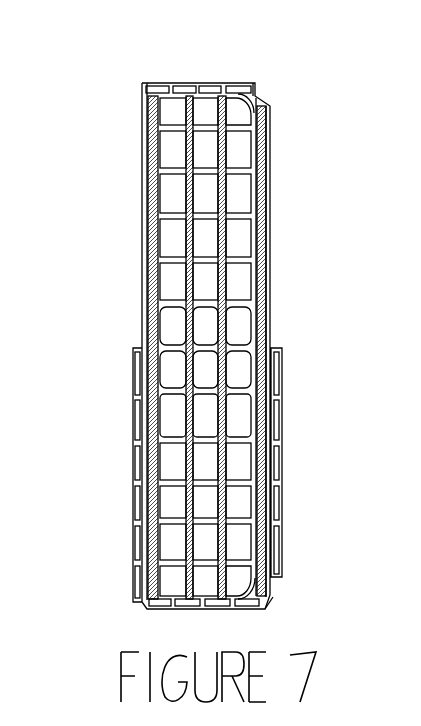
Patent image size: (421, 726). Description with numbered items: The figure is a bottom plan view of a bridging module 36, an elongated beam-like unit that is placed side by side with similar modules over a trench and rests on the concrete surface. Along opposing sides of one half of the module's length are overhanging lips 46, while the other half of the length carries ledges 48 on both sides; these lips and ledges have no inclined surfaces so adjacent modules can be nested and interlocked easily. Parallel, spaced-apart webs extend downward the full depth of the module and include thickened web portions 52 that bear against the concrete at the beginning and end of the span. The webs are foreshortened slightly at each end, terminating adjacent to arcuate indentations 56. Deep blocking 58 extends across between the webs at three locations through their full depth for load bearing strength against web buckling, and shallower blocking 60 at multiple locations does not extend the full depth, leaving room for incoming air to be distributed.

The bridging module 36 is at (262, 69).
The overhanging lips 46 is at (282, 498).
The ledges 48 is at (143, 152).
The thickened web portions 52 is at (267, 196).
The arcuate indentations 56 is at (262, 94).
The deep blocking 58 is at (237, 338).
The shallower blocking 60 is at (237, 172).